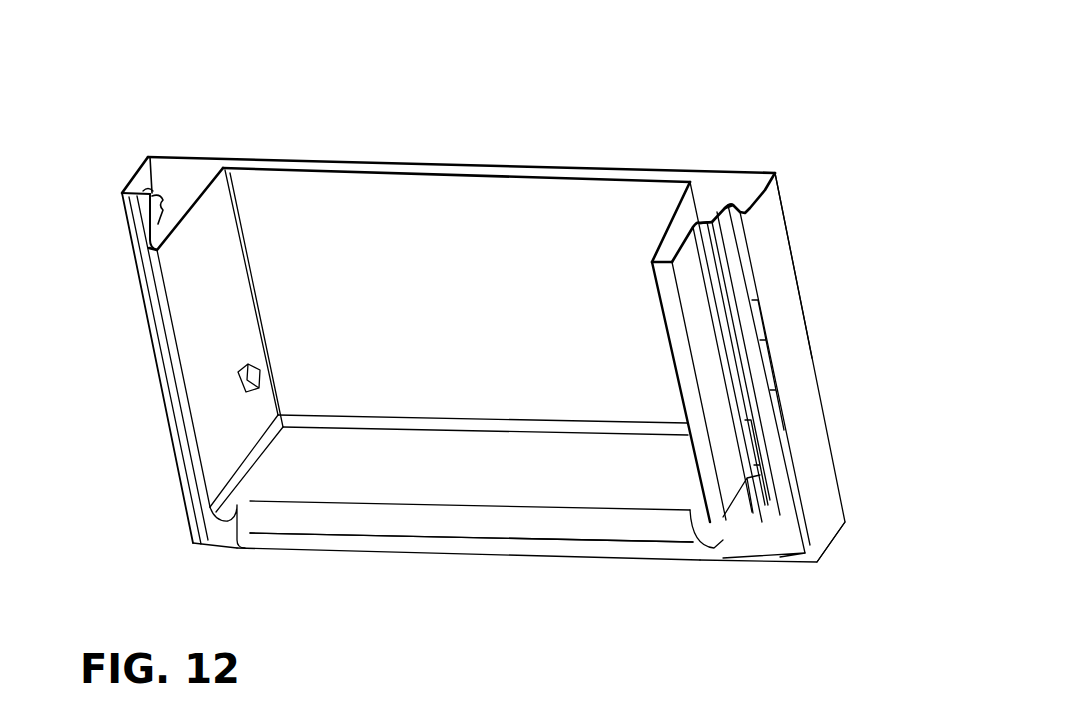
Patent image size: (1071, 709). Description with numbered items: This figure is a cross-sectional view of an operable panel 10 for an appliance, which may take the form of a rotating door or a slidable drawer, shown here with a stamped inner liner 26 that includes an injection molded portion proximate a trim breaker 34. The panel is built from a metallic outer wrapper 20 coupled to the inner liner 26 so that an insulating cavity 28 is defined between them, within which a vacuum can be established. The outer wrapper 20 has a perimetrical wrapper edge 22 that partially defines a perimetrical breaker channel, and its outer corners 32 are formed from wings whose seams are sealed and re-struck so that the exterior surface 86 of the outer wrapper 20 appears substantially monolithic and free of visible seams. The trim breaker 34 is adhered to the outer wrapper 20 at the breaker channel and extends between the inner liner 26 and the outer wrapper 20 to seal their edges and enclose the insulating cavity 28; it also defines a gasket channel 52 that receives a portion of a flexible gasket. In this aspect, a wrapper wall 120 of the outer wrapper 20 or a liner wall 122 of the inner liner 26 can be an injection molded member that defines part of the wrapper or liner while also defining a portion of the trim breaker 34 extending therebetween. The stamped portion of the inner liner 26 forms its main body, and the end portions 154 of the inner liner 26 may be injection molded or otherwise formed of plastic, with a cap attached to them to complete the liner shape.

The operable panel 10 is at (837, 300).
The metallic outer wrapper 20 is at (807, 423).
The perimetrical wrapper edge 22 is at (745, 210).
The inner liner 26 is at (470, 200).
The insulating cavity 28 is at (186, 175).
The outer corner 32 is at (825, 555).
The trim breaker 34 is at (770, 373).
The gasket channel 52 is at (730, 205).
The exterior surface 86 is at (768, 252).
The wrapper wall 120 is at (138, 178).
The liner wall 122 is at (192, 290).
The end portion 154 is at (342, 545).